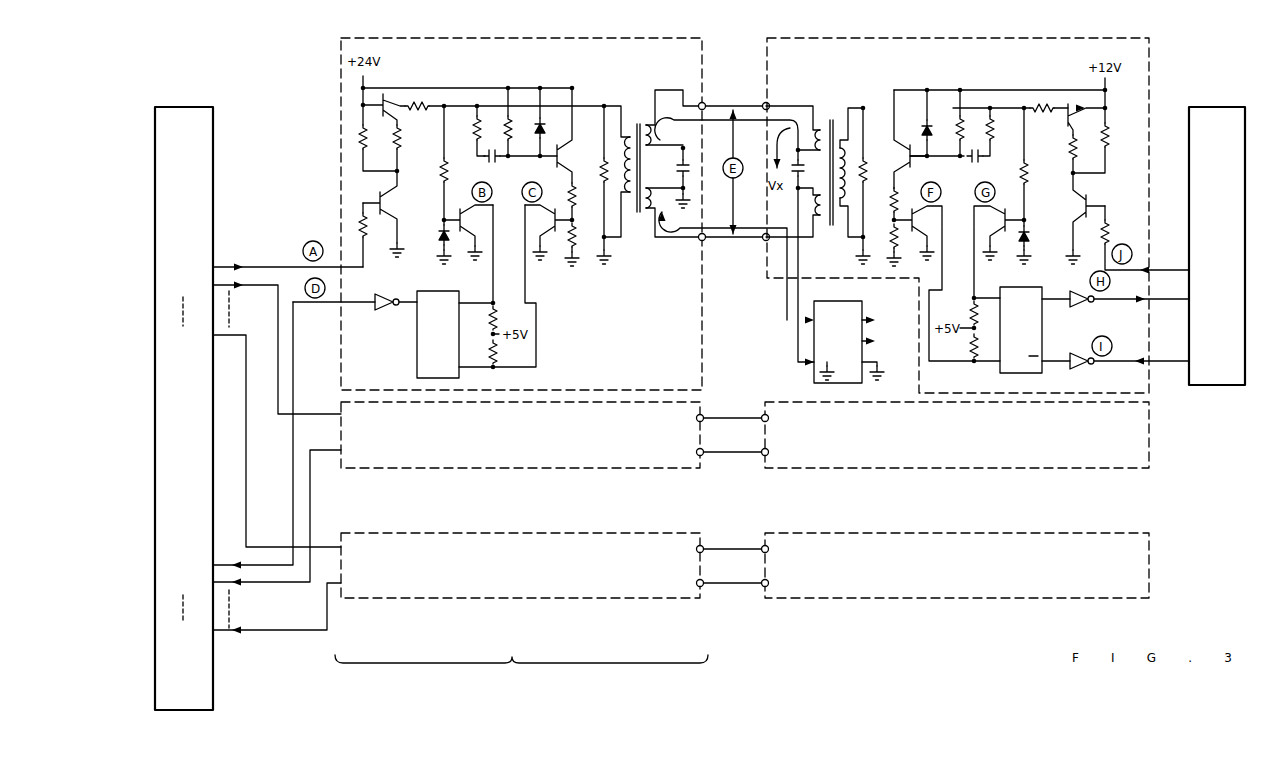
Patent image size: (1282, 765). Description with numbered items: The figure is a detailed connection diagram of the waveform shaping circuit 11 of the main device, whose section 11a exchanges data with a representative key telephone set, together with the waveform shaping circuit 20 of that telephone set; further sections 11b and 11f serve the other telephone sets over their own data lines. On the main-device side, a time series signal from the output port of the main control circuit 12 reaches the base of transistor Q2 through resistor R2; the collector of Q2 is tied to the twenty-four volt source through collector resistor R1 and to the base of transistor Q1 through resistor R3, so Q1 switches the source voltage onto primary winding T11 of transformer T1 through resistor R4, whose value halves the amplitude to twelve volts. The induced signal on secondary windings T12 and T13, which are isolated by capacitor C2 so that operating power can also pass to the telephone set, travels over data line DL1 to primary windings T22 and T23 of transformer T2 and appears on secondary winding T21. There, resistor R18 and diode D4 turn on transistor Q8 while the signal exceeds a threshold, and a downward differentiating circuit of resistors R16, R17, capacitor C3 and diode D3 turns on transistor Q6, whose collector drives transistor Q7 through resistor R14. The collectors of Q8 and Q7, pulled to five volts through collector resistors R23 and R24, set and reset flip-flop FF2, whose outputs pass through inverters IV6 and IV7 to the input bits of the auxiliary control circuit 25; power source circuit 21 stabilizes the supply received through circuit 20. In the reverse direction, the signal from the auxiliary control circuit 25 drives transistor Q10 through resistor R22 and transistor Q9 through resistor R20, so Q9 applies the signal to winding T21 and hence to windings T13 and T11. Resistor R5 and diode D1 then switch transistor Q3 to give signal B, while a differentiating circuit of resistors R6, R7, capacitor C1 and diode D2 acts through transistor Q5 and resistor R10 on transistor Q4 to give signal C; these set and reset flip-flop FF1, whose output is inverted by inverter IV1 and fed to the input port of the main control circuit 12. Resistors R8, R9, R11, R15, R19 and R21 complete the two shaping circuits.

The main control circuit 12 is at (203, 105).
The auxiliary control circuit 25 is at (1245, 345).
The waveform shaping circuit 11 is at (521, 674).
The waveform shaping circuit 11a is at (695, 385).
The waveform shaping circuit 11b is at (695, 462).
The waveform shaping circuit 11f is at (693, 594).
The waveform shaping circuit 20 is at (946, 62).
The power source circuit 21 is at (857, 301).
The transformer T1 is at (652, 155).
The primary winding of transformer T1 T11 is at (620, 224).
The secondary winding of transformer T1 T12 is at (650, 128).
The secondary winding of transformer T1 T13 is at (650, 206).
The transformer T2 is at (826, 167).
The secondary winding of transformer T2 T21 is at (846, 152).
The primary winding of transformer T2 T22 is at (817, 134).
The primary winding of transformer T2 T23 is at (803, 225).
The data line DL1 is at (734, 164).
The transistor Q1 is at (384, 103).
The transistor Q2 is at (383, 214).
The transistor Q3 is at (468, 232).
The transistor Q4 is at (548, 232).
The transistor Q5 is at (570, 135).
The transistor Q6 is at (905, 139).
The transistor Q7 is at (934, 283).
The transistor Q8 is at (999, 252).
The transistor Q9 is at (1083, 111).
The transistor Q10 is at (1077, 218).
The collector resistor R1 is at (378, 138).
The resistor R2 is at (372, 235).
The resistor R3 is at (405, 148).
The resistor R4 is at (424, 115).
The resistor R5 is at (453, 163).
The resistor R6 is at (486, 131).
The resistor R7 is at (517, 122).
The resistor R8 is at (501, 312).
The resistor R9 is at (501, 352).
The resistor R10 is at (584, 201).
The resistor R11 is at (583, 244).
The resistor R14 is at (884, 204).
The resistor R15 is at (905, 245).
The resistor R16 is at (972, 123).
The resistor R17 is at (1002, 124).
The resistor R18 is at (1037, 164).
The resistor R19 is at (1049, 117).
The resistor R20 is at (1086, 154).
The resistor R21 is at (1103, 140).
The resistor R22 is at (1145, 240).
The collector resistor R23 is at (962, 308).
The collector resistor R24 is at (957, 347).
The diode D1 is at (453, 242).
The diode D2 is at (549, 122).
The diode D3 is at (936, 123).
The diode D4 is at (1033, 242).
The capacitor C1 is at (496, 164).
The capacitor C2 is at (675, 178).
The capacitor C3 is at (978, 159).
The flip-flop circuit FF1 is at (438, 334).
The flip-flop circuit FF2 is at (1021, 330).
The inverter IV1 is at (355, 294).
The inverter IV6 is at (1115, 291).
The inverter IV7 is at (1115, 353).